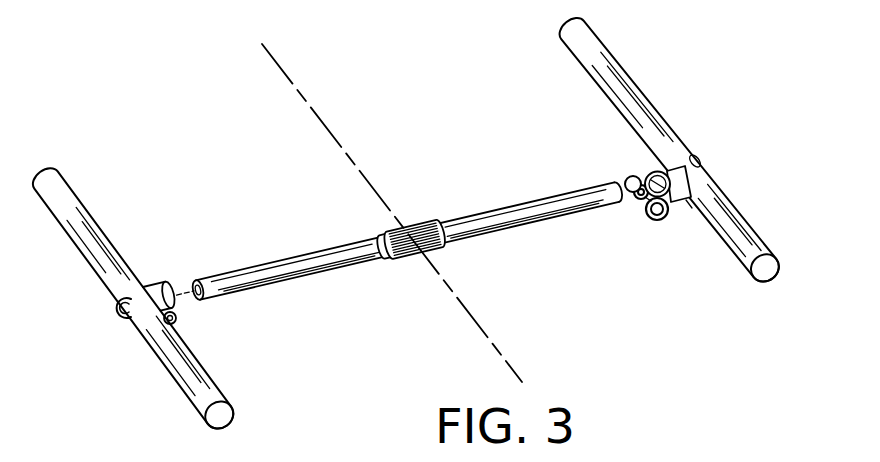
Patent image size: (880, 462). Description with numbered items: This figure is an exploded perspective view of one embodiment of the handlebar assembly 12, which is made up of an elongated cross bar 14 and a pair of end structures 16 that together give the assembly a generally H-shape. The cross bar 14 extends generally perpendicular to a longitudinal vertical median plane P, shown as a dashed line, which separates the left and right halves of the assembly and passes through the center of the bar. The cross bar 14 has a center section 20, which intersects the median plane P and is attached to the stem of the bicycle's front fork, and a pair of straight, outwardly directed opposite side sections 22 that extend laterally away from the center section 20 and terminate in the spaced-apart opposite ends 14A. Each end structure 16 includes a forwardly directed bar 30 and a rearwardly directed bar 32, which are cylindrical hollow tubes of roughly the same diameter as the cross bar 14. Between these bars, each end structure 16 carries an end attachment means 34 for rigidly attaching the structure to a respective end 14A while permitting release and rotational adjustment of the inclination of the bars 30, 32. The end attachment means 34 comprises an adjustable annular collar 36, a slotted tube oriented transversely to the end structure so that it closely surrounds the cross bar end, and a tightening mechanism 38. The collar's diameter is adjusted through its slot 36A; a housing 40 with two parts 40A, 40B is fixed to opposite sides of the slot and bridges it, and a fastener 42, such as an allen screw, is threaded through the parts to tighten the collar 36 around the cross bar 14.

The handlebar assembly 12 is at (160, 132).
The cross bar 14 is at (407, 225).
The opposite ends 14A is at (213, 301).
The end structure 16 is at (421, 223).
The center section 20 is at (410, 225).
The opposite side sections 22 is at (332, 243).
The forwardly directed bar 30 is at (95, 226).
The rearwardly directed bar 32 is at (231, 392).
The end attachment means 34 is at (185, 268).
The annular collar 36 is at (147, 277).
The slot 36A is at (117, 311).
The tightening mechanism 38 is at (181, 323).
The housing 40 is at (638, 168).
The housing part 40A is at (662, 218).
The housing part 40B is at (625, 178).
The fastener 42 is at (645, 198).
The median plane P is at (318, 118).